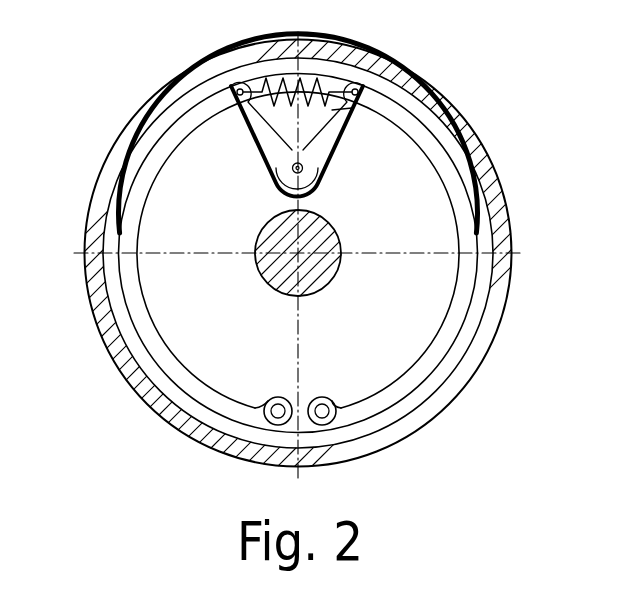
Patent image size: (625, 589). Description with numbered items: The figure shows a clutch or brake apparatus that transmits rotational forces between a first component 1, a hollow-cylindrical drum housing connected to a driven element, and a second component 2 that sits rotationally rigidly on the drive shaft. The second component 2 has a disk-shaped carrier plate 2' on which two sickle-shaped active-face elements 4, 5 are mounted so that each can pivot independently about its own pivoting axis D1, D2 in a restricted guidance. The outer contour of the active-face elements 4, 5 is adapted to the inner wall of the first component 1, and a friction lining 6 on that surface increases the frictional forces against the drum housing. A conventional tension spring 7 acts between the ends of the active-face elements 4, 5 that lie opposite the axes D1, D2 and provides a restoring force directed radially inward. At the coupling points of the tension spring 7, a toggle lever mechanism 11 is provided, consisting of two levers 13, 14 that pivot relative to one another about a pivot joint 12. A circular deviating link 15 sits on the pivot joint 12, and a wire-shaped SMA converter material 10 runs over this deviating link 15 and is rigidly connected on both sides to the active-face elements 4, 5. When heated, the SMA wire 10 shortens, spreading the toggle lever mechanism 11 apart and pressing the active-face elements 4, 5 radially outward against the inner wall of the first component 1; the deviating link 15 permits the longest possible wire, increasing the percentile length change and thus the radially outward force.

The first component 1 is at (152, 100).
The second component 2 is at (232, 422).
The carrier plate 2' is at (287, 269).
The active-face element 4 is at (130, 300).
The active-face element 5 is at (455, 313).
The friction lining 6 is at (457, 135).
The tension spring 7 is at (333, 90).
The converter material 10 is at (271, 163).
The toggle lever mechanism 11 is at (235, 139).
The pivot joint 12 is at (303, 165).
The lever 13 is at (247, 106).
The lever 14 is at (357, 90).
The deviating link 15 is at (310, 178).
The pivoting axis D1 is at (277, 413).
The pivoting axis D2 is at (322, 413).